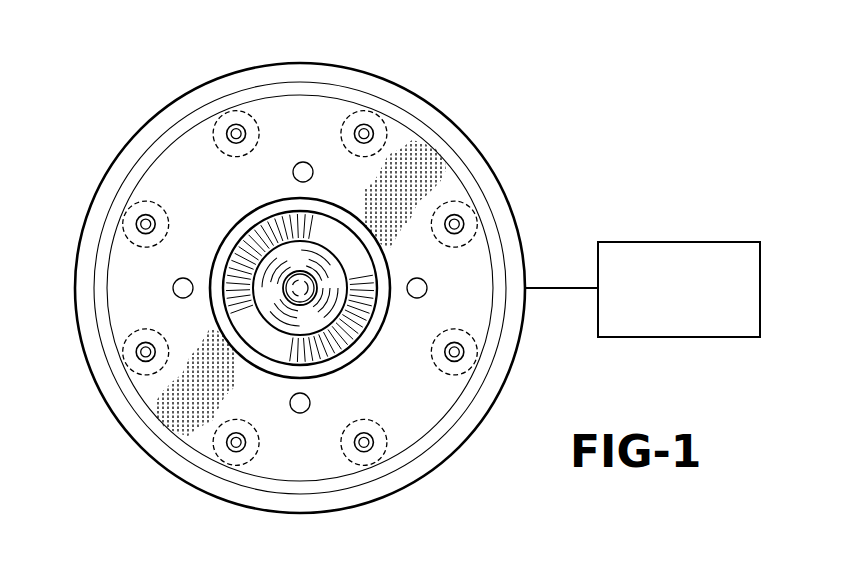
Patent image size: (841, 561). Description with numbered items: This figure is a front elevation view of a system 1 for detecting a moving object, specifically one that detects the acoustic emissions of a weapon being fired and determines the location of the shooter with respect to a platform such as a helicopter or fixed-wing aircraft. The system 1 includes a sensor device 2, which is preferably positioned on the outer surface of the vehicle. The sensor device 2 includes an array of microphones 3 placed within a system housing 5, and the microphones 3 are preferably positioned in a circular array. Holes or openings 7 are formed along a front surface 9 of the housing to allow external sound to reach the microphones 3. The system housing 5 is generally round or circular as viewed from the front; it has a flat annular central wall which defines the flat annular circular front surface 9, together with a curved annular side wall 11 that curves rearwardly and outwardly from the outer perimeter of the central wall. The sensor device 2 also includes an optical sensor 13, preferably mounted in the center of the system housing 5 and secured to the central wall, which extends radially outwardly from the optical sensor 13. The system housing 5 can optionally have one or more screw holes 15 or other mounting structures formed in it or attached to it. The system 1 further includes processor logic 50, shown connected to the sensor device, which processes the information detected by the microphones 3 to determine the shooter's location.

The system 1 is at (600, 106).
The sensor device 2 is at (219, 59).
The microphones 3 is at (237, 128).
The system housing 5 is at (130, 133).
The holes or openings 7 is at (227, 139).
The front surface 9 is at (212, 206).
The curved annular side wall 11 is at (268, 80).
The optical sensor 13 is at (282, 326).
The screw holes 15 is at (303, 162).
The processor logic 50 is at (680, 242).